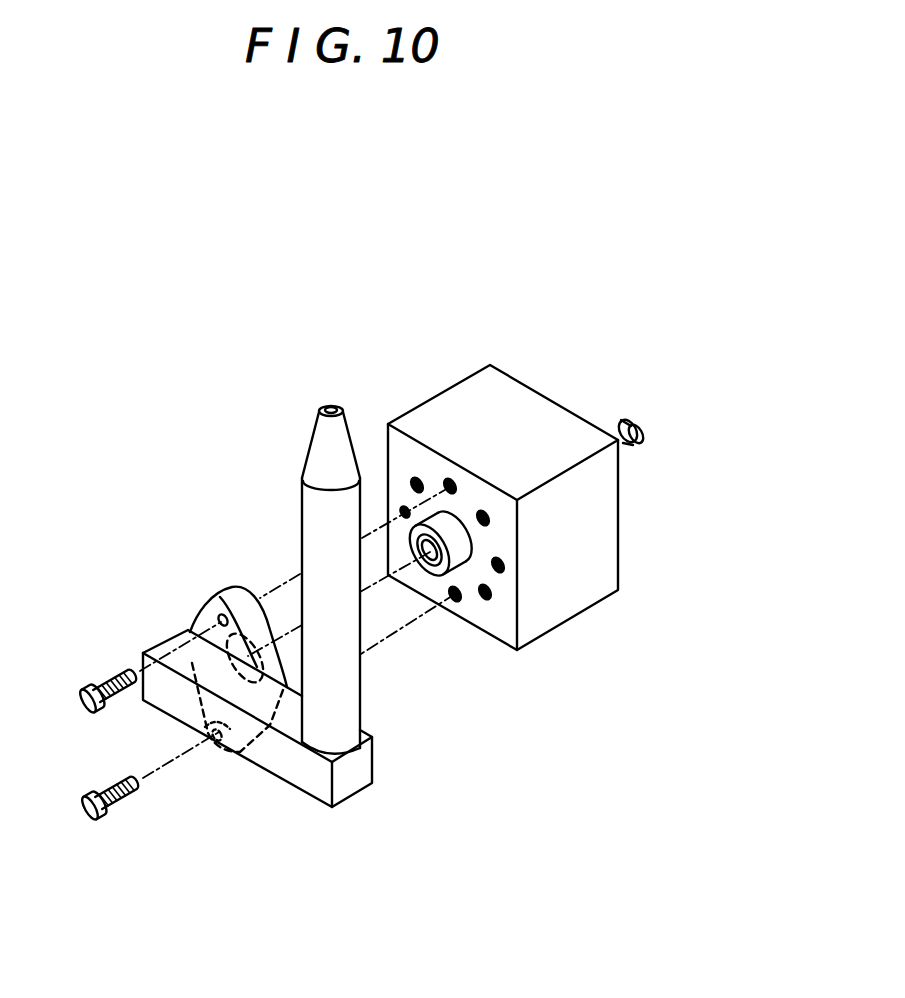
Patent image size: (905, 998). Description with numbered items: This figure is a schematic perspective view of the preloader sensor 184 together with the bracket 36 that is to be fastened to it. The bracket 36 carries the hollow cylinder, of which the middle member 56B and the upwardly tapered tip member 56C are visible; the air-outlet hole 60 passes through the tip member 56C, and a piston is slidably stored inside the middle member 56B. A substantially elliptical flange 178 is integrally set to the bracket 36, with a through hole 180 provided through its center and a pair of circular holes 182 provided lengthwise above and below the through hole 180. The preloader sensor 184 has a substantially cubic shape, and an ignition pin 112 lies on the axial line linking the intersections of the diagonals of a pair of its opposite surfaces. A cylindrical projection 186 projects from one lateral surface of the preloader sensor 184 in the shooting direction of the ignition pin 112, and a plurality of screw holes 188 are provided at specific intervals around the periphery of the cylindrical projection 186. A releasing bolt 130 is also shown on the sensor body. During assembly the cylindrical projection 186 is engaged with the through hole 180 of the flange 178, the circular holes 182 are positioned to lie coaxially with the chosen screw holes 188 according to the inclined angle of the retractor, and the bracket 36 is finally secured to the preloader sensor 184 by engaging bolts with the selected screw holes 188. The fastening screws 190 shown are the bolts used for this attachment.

The preloader sensor 184 is at (495, 340).
The screw holes 188 is at (400, 511).
The cylindrical projection 186 is at (447, 526).
The ignition pin 112 is at (433, 573).
The releasing bolt 130 is at (644, 417).
The tip member 56C is at (307, 447).
The middle member 56B is at (300, 517).
The air-outlet hole 60 is at (331, 404).
The bracket 36 is at (323, 793).
The flange 178 is at (231, 586).
The through hole 180 is at (262, 597).
The circular holes 182 is at (221, 621).
The screws 190 is at (83, 690).